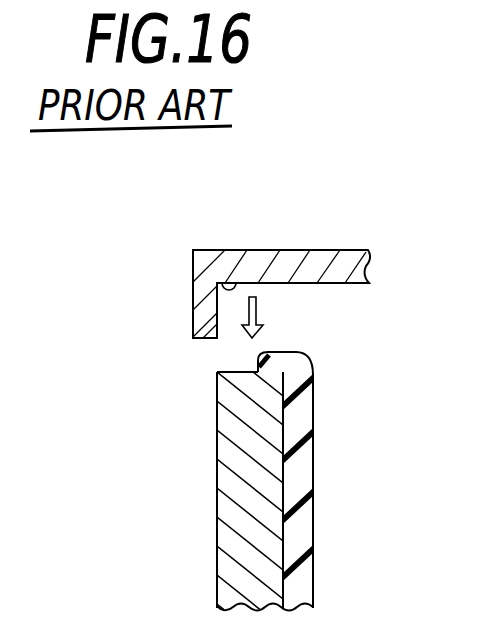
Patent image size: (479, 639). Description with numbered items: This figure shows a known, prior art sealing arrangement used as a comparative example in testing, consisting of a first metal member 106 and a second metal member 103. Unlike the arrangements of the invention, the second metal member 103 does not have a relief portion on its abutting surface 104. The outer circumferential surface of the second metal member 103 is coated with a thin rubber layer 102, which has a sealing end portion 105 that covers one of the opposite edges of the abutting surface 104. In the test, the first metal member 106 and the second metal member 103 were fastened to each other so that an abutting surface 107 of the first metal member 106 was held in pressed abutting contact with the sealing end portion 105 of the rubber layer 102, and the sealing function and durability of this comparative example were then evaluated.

The thin rubber layer 102 is at (300, 532).
The second metal member 103 is at (206, 512).
The abutting surface 104 is at (243, 372).
The sealing end portion 105 is at (285, 362).
The first metal member 106 is at (295, 240).
The abutting surface 107 is at (224, 288).